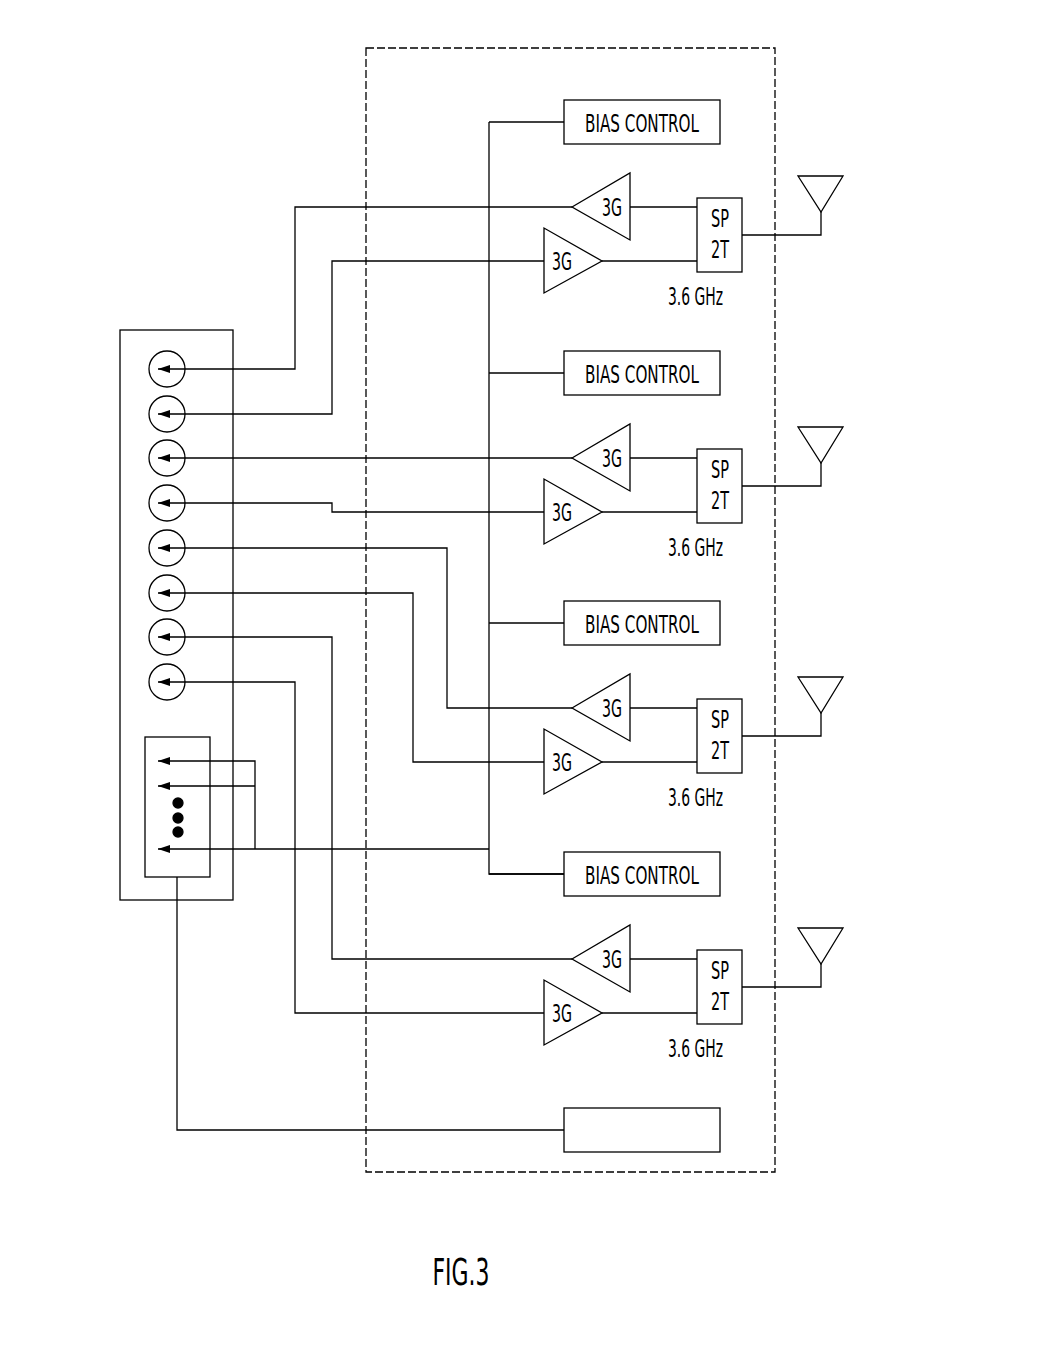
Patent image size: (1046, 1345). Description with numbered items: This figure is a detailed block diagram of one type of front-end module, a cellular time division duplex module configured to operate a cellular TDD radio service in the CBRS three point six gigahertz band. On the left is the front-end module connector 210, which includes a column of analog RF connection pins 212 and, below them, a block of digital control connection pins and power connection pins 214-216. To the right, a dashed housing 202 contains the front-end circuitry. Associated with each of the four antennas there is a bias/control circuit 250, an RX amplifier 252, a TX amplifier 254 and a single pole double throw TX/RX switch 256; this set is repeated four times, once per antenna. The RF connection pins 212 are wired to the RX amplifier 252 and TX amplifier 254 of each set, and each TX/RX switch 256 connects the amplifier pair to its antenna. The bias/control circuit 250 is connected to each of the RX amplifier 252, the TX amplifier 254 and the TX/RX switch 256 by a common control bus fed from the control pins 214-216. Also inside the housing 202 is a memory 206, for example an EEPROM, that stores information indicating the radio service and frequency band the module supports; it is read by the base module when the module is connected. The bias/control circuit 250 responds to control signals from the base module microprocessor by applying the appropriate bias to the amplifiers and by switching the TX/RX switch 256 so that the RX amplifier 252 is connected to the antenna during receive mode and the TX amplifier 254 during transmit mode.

The housing 202 is at (700, 48).
The memory 206 is at (652, 1108).
The front-end module connector 210 is at (178, 330).
The analog RF connection pins 212 is at (149, 503).
The block of digital control connection pins and power connection pins 214-216 is at (145, 812).
The bias/control circuit 250 is at (604, 483).
The RX amplifier 252 is at (634, 572).
The TX amplifier 254 is at (600, 628).
The single pole double throw (SP2T) TX/RX switch 256 is at (744, 611).